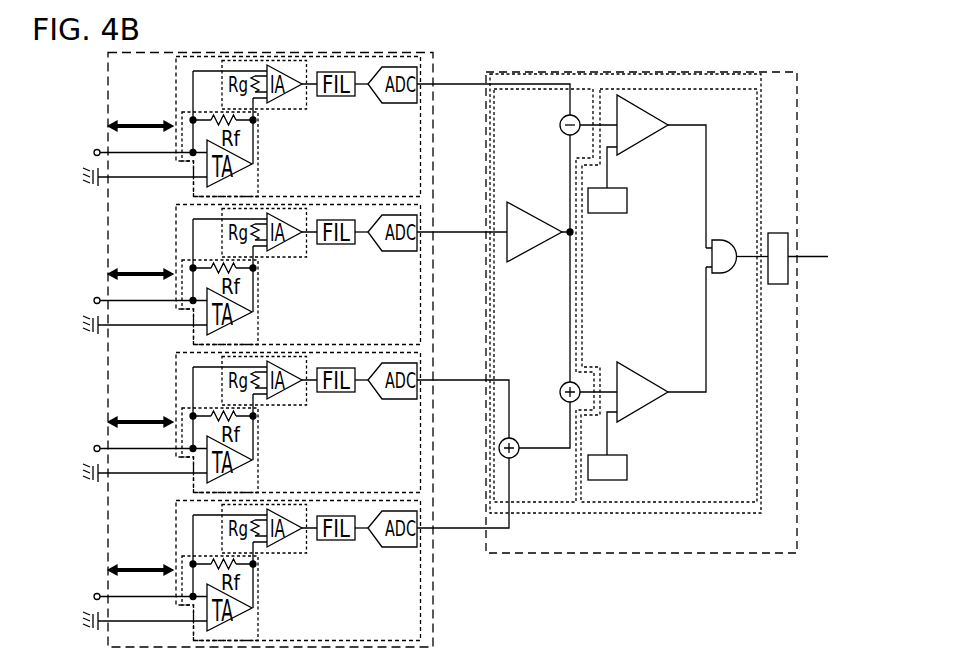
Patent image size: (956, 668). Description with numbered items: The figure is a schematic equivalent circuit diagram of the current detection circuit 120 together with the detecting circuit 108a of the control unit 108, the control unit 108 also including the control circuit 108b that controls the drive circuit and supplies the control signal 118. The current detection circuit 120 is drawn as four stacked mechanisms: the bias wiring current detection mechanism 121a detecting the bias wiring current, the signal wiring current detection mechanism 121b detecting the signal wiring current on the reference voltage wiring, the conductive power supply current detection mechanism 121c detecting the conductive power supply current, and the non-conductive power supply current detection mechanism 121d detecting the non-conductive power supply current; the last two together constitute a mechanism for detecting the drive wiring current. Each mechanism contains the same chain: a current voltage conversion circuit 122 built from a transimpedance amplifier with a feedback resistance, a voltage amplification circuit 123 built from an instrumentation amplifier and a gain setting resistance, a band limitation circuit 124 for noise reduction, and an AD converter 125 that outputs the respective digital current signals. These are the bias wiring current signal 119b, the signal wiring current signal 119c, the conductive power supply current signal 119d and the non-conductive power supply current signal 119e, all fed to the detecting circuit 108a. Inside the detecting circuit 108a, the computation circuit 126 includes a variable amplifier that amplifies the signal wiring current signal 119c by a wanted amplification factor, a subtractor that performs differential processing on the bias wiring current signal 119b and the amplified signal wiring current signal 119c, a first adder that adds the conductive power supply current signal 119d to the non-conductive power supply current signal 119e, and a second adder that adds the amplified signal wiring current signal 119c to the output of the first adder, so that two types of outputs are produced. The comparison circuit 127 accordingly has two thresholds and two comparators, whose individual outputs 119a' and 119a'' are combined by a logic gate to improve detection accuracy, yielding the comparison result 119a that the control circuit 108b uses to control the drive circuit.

The control unit 108 is at (735, 554).
The detecting circuit 108a is at (577, 514).
The control circuit 108b is at (778, 284).
The control signal 118 is at (820, 256).
The comparison result 119a is at (739, 221).
The first comparator output 119a' is at (695, 169).
The second comparator output 119a'' is at (696, 355).
The bias wiring current signal 119b is at (458, 82).
The signal wiring current signal 119c is at (458, 230).
The conductive power supply current signal 119d is at (458, 378).
The non-conductive power supply current signal 119e is at (458, 526).
The current detection circuit 120 is at (108, 101).
The bias wiring current detection mechanism 121a is at (421, 170).
The signal wiring current detection mechanism 121b is at (421, 318).
The conductive power supply current detection mechanism 121c is at (421, 466).
The non-conductive power supply current detection mechanism 121d is at (421, 630).
The current voltage conversion circuit 122 is at (258, 170).
The voltage amplification circuit 123 is at (287, 109).
The band limitation circuit 124 is at (335, 96).
The AD converter 125 is at (390, 103).
The computation circuit 126 is at (583, 88).
The comparison circuit 127 is at (697, 88).